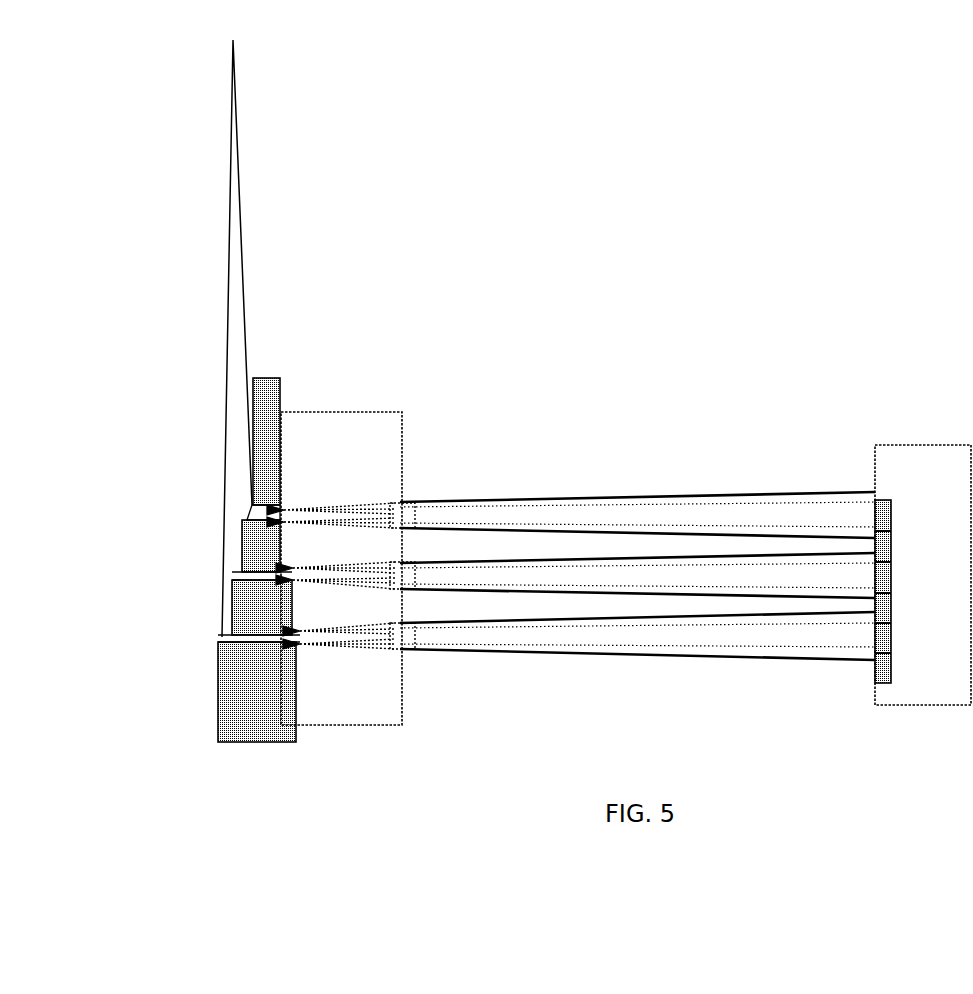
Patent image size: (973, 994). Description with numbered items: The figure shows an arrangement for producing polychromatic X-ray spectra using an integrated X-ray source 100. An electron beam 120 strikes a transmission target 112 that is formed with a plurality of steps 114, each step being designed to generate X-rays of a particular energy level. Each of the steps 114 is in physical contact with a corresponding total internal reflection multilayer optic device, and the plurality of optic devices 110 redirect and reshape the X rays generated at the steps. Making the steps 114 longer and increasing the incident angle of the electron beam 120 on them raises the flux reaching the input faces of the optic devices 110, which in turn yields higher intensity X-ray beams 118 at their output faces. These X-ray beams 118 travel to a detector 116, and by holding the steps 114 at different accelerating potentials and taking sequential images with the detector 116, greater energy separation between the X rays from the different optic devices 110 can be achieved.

The integrated X-ray source 100 is at (333, 321).
The optic devices 110 is at (320, 503).
The transmission target 112 is at (271, 385).
The steps 114 is at (247, 521).
The detector 116 is at (940, 497).
The X-ray beams 118 is at (717, 490).
The electron beam 120 is at (242, 210).